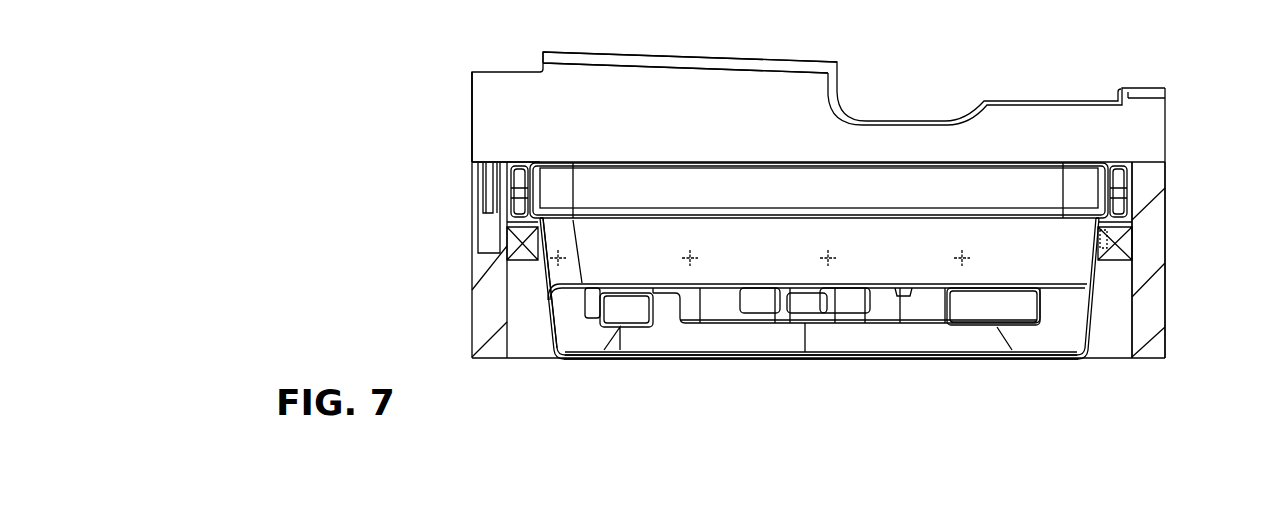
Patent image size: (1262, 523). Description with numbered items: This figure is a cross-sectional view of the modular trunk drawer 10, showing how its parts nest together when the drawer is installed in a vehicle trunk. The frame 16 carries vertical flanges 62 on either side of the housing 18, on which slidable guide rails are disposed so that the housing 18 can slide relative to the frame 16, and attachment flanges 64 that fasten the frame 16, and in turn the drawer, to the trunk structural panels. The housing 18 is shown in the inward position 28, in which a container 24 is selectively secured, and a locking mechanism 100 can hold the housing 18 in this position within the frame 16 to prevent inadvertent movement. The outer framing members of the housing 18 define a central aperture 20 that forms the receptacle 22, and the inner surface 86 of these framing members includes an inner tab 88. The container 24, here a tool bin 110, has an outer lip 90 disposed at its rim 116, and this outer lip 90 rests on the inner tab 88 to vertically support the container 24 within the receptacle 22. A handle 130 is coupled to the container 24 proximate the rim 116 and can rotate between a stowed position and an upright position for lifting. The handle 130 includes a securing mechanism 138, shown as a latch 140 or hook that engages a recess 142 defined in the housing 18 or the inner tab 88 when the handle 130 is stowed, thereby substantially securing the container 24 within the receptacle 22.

The modular trunk drawer 10 is at (399, 117).
The frame 16 is at (1188, 97).
The housing 18 is at (441, 272).
The central aperture 20 is at (508, 160).
The receptacle 22 is at (545, 260).
The container 24 is at (952, 360).
The inward position 28 is at (998, 98).
The vertical flange 62 is at (493, 93).
The attachment flange 64 is at (597, 52).
The inner surface 86 is at (1132, 327).
The inner tab 88 is at (1117, 250).
The outer lip 90 is at (505, 253).
The locking mechanism 100 is at (487, 225).
The tool bin 110 is at (777, 326).
The rim 116 is at (617, 162).
The handle 130 is at (538, 162).
The securing mechanism 138 is at (552, 235).
The latch 140 is at (1103, 225).
The recess 142 is at (1103, 242).